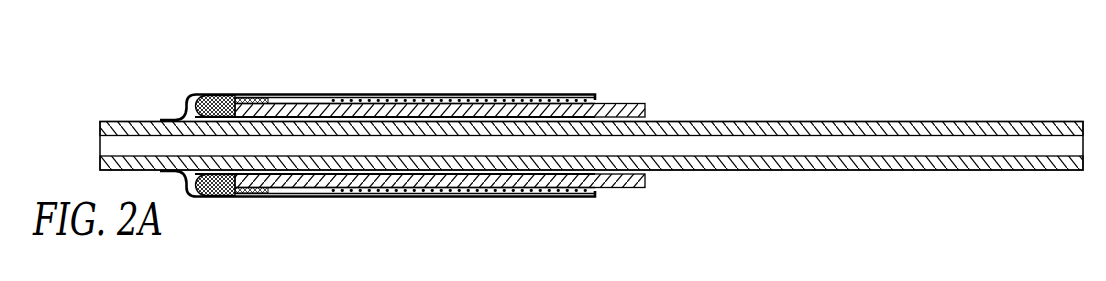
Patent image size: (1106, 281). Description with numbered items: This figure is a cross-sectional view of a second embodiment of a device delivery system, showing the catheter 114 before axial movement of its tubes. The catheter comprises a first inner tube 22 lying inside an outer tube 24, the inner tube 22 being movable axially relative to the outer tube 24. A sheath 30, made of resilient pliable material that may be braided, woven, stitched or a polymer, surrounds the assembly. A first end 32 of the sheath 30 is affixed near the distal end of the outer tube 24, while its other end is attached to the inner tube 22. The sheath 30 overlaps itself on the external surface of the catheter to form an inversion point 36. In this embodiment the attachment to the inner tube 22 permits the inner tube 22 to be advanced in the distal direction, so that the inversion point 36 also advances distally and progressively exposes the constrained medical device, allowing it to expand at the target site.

The first inner tube 22 is at (122, 120).
The outer tube 24 is at (634, 98).
The sheath 30 is at (225, 92).
The first end 32 is at (252, 97).
The inversion point 36 is at (597, 97).
The catheter 114 is at (613, 98).